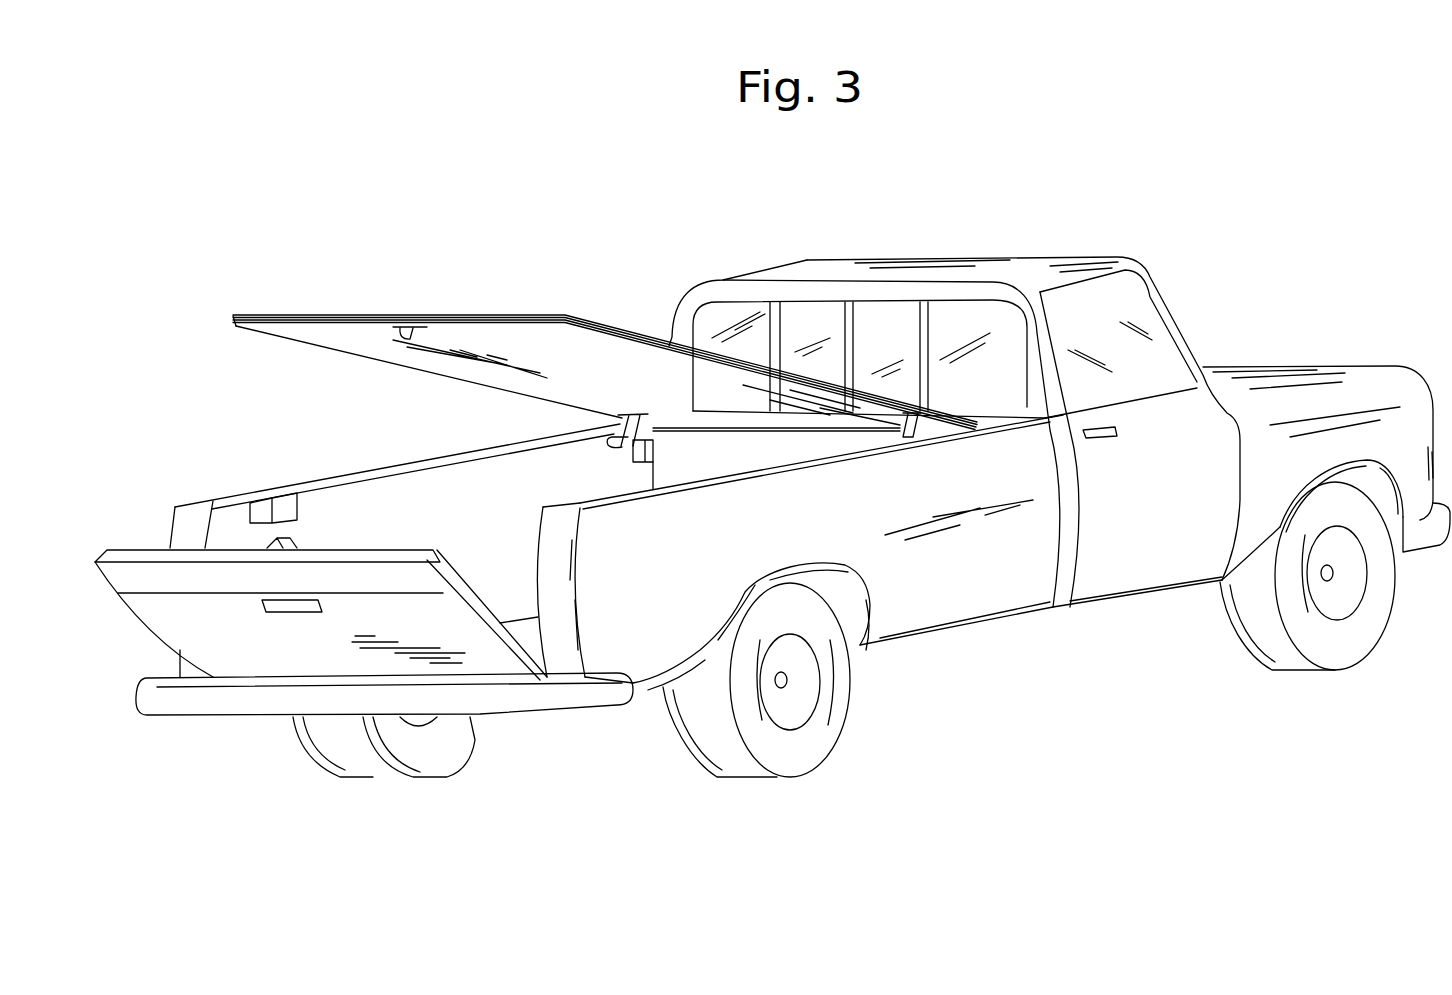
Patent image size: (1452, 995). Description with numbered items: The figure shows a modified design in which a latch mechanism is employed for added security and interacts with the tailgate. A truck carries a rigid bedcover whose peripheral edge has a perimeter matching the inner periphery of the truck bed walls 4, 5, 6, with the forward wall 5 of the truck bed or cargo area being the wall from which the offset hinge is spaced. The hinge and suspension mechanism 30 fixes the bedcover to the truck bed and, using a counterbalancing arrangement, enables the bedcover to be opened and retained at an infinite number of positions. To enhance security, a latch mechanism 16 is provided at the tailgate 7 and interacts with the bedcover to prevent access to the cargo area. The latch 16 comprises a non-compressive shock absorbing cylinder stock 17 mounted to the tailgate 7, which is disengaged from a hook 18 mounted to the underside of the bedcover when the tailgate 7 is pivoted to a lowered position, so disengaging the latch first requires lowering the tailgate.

The truck bed wall 4 is at (467, 514).
The forward wall of the truck bed 5 is at (707, 466).
The truck bed wall 6 is at (665, 581).
The tailgate 7 is at (319, 657).
The latch mechanism 16 is at (300, 538).
The non-compressive shock absorbing cylinder stock 17 is at (280, 538).
The hook 18 is at (396, 332).
The hinge and suspension mechanism 30 is at (604, 449).